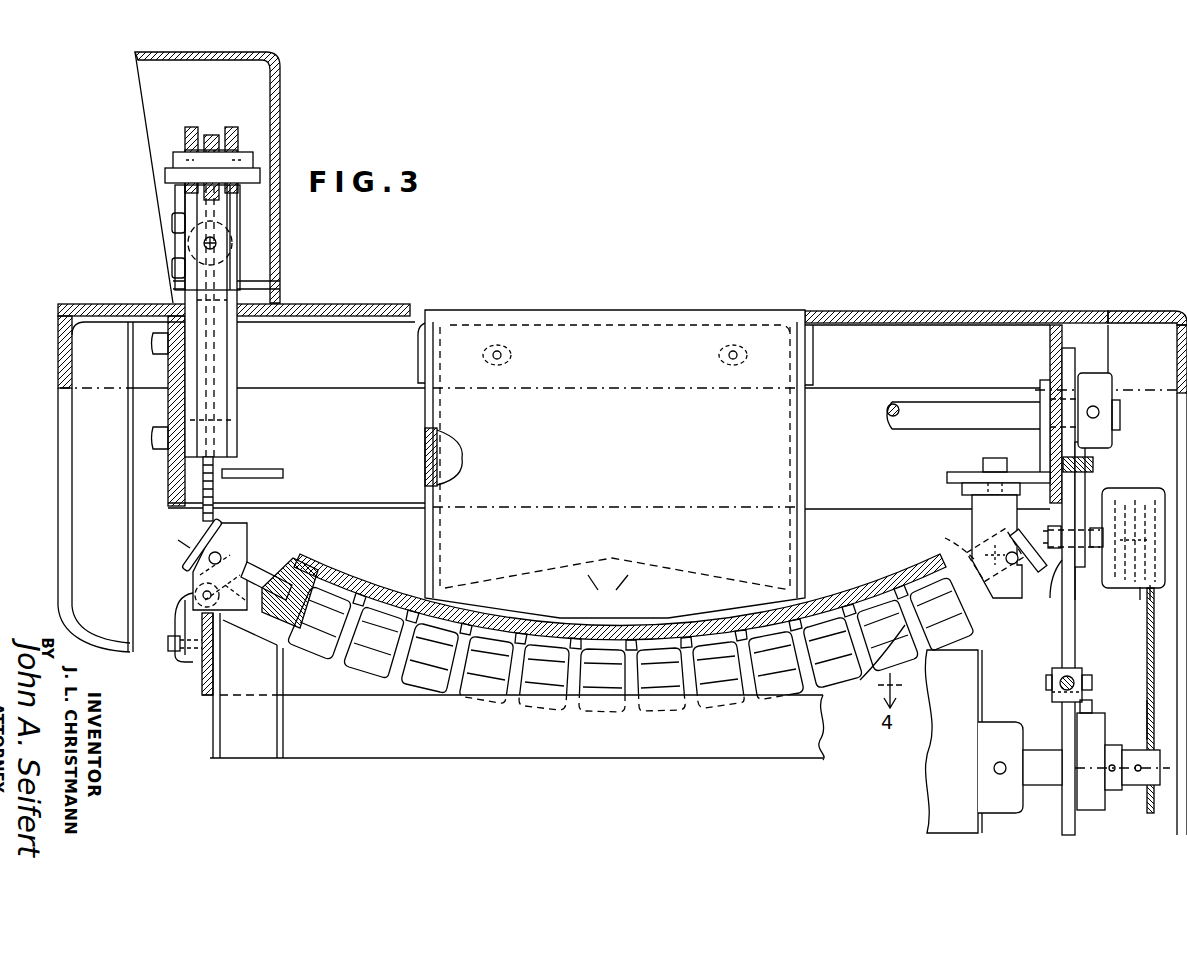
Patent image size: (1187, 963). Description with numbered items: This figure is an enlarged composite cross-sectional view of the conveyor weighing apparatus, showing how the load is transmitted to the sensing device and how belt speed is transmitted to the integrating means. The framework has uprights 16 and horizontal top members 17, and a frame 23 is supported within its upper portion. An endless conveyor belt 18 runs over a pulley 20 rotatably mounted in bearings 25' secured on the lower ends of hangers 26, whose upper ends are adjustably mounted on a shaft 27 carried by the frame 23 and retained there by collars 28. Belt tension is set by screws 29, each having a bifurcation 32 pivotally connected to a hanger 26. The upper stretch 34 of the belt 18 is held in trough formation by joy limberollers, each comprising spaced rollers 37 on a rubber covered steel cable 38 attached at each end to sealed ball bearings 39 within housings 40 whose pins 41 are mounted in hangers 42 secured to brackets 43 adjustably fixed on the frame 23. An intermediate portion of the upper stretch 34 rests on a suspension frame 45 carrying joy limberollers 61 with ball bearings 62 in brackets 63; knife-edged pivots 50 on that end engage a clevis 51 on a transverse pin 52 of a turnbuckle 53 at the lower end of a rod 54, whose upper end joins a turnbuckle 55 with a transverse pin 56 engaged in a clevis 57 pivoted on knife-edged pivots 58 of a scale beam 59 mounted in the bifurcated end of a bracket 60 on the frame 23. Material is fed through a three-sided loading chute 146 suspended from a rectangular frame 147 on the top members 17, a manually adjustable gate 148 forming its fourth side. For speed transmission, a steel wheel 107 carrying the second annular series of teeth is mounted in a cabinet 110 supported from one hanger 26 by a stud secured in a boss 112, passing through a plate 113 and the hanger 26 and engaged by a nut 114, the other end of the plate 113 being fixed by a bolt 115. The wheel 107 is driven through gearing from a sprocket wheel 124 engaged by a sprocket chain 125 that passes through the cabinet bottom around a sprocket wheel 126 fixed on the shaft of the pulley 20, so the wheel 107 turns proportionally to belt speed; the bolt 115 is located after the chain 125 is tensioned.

The uprights 16 is at (70, 518).
The horizontal top members 17 is at (410, 302).
The endless conveyor belt 18 is at (812, 600).
The pulley 20 is at (930, 795).
The frame 23 is at (168, 360).
The bearings 25' is at (1122, 750).
The hangers 26 is at (1070, 370).
The shaft 27 is at (922, 429).
The collars 28 is at (1105, 375).
The screws 29 is at (1060, 678).
The bifurcation 32 is at (1052, 694).
The upper stretch 34 is at (368, 571).
The rollers 37 is at (880, 660).
The neoprene or rubber covered steel cable 38 is at (970, 565).
The sealed ball bearings 39 is at (1063, 530).
The housings 40 is at (1033, 578).
The pins 41 is at (1011, 565).
The hangers 42 is at (972, 520).
The brackets 43 is at (1040, 445).
The suspension frame 45 is at (198, 703).
The knife-edged pivots 50 is at (170, 650).
The clevis 51 is at (185, 617).
The transverse pin 52 is at (195, 595).
The turnbuckle 53 is at (205, 530).
The rod 54 is at (220, 325).
The turnbuckle 55 is at (235, 268).
The transverse pin 56 is at (205, 243).
The clevis 57 is at (175, 212).
The knife-edged pivots 58 is at (165, 175).
The scale beam 59 is at (211, 133).
The bracket 60 is at (232, 372).
The joy limberollers 61 is at (378, 665).
The ball bearings 62 is at (193, 560).
The brackets 63 is at (248, 550).
The steel wheel 107 is at (1147, 620).
The cabinet 110 is at (1135, 588).
The boss 112 is at (1080, 585).
The plate 113 is at (1082, 490).
The nut 114 is at (1052, 583).
The bolt 115 is at (1090, 462).
The sprocket wheel 124 is at (1150, 492).
The sprocket chain 125 is at (1147, 700).
The sprocket wheel 126 is at (1150, 815).
The loading chute 146 is at (816, 490).
The rectangular frame 147 is at (418, 340).
The gate 148 is at (430, 455).